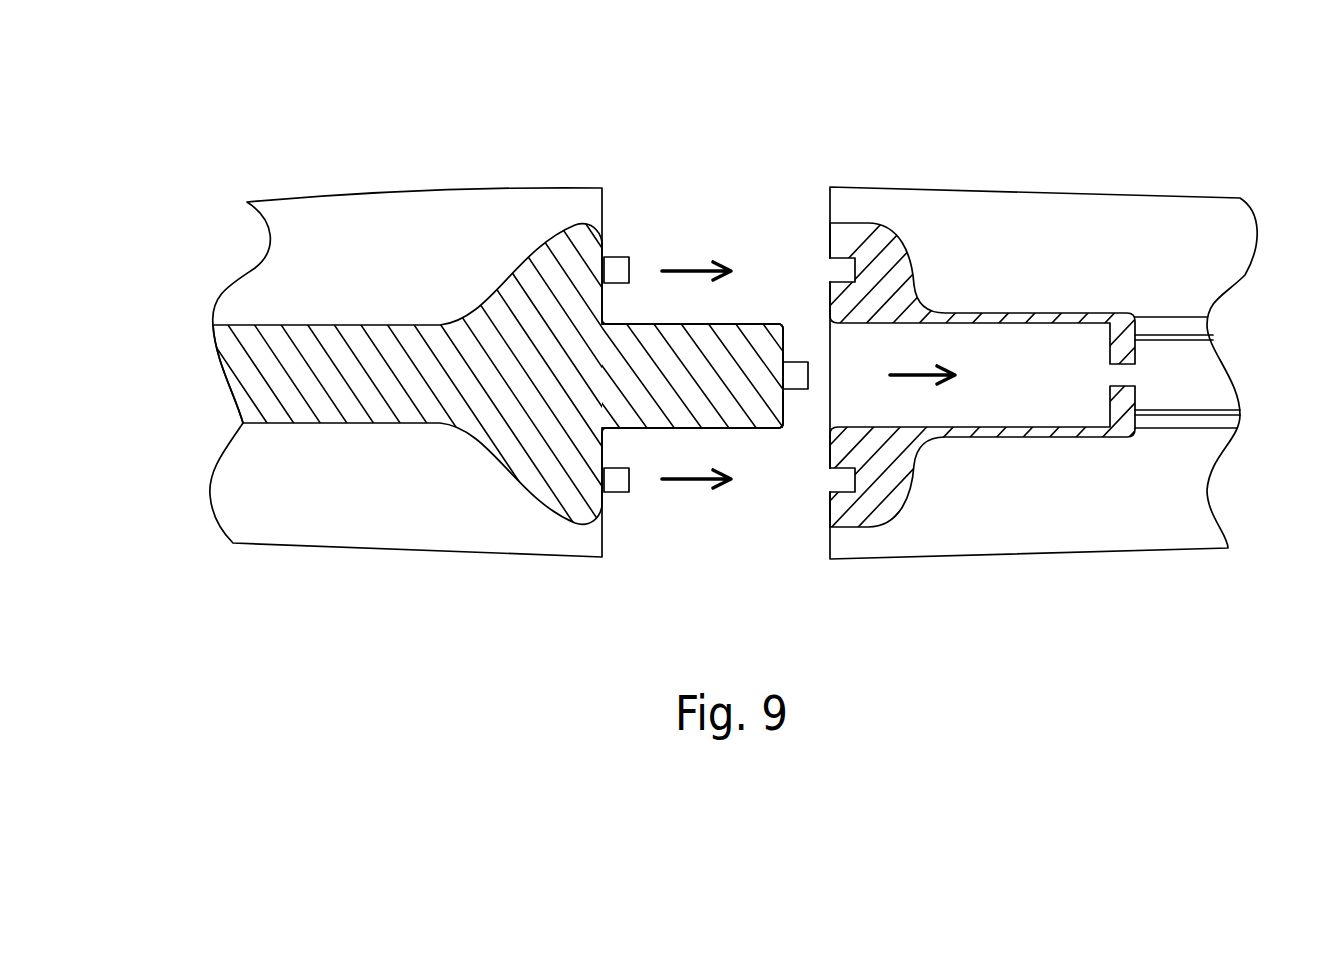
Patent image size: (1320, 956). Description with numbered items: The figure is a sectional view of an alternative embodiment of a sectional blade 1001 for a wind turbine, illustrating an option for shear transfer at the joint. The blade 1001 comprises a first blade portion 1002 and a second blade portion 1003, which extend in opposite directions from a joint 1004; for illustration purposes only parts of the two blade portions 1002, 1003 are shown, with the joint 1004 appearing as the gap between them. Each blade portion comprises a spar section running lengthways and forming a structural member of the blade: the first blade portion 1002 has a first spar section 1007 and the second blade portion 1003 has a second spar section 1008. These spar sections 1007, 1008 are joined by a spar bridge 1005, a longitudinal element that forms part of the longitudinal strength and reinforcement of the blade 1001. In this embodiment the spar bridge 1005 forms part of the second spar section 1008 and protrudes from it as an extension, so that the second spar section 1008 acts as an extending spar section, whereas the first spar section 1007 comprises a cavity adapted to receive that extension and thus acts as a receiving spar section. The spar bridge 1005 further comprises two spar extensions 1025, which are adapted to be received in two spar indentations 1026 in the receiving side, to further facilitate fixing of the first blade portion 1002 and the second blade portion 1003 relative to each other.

The sectional blade 1001 is at (251, 123).
The first blade portion 1002 is at (1083, 518).
The second blade portion 1003 is at (300, 517).
The joint 1004 is at (698, 158).
The spar bridge 1005 is at (730, 347).
The first spar section 1007 is at (1008, 317).
The second spar section 1008 is at (433, 357).
The spar extensions 1025 is at (615, 268).
The spar indentations 1026 is at (835, 272).